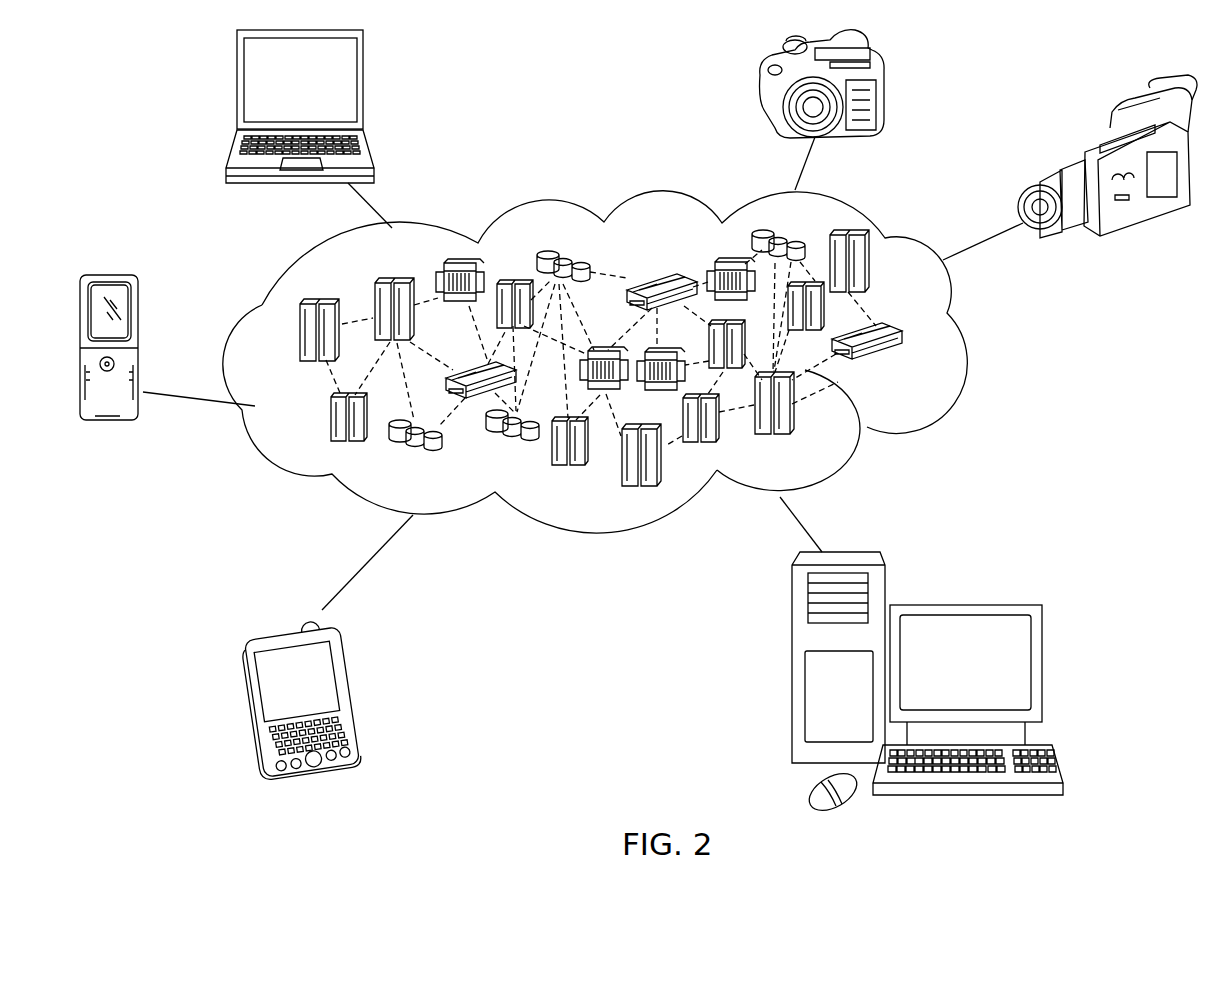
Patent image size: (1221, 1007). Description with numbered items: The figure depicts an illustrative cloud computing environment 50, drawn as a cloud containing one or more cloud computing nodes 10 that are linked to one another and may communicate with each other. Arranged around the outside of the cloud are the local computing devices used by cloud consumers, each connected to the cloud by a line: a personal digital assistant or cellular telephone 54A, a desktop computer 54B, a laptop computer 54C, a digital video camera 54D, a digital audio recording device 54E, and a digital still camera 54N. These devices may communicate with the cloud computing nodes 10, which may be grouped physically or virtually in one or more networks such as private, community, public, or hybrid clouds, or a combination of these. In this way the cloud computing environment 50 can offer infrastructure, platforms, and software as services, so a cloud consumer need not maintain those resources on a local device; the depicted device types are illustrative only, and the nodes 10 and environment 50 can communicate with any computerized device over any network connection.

The cloud computing nodes 10 is at (619, 362).
The cloud computing environment 50 is at (963, 336).
The personal digital assistant or cellular telephone 54A is at (356, 697).
The desktop computer 54B is at (966, 605).
The laptop computer 54C is at (363, 89).
The digital video camera 54D is at (1120, 222).
The digital audio recording device 54E is at (103, 422).
The digital still camera 54N is at (758, 100).